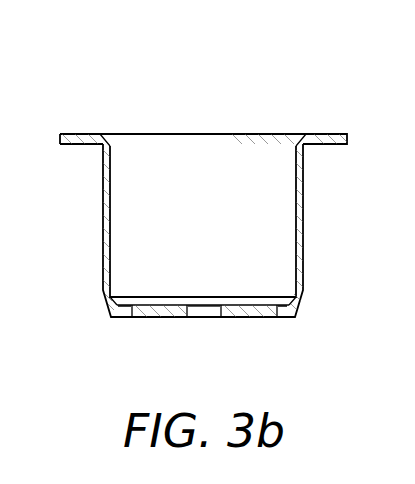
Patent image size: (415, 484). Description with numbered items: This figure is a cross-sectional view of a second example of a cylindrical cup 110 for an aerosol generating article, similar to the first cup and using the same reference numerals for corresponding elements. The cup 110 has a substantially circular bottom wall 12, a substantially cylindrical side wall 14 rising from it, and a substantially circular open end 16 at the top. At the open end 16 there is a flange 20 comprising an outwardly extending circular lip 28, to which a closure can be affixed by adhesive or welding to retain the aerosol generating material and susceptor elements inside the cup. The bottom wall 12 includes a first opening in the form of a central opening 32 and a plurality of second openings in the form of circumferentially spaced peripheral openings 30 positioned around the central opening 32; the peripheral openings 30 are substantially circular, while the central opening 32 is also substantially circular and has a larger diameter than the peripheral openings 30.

The cylindrical cup 110 is at (201, 200).
The open end 16 is at (201, 218).
The flange 20 is at (190, 112).
The circular lip 28 is at (67, 138).
The side wall 14 is at (303, 205).
The bottom wall 12 is at (204, 340).
The peripheral openings 30 is at (124, 319).
The central opening 32 is at (204, 319).